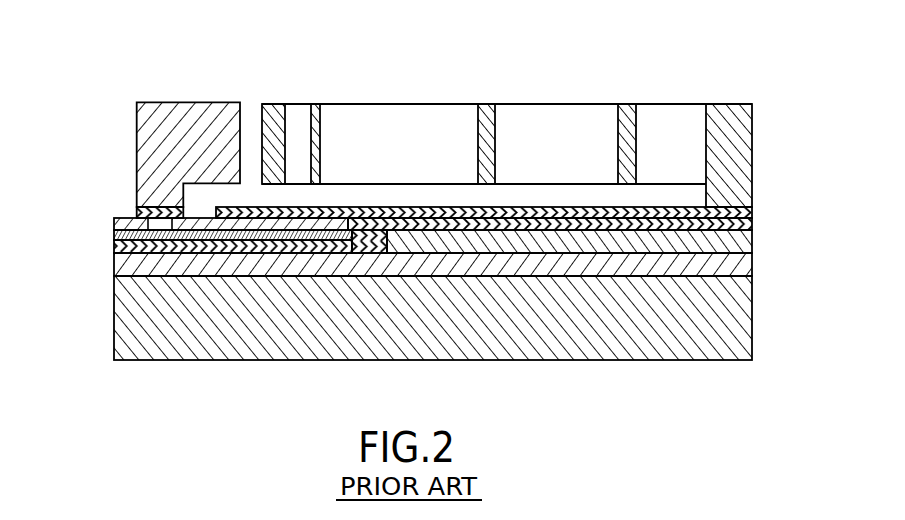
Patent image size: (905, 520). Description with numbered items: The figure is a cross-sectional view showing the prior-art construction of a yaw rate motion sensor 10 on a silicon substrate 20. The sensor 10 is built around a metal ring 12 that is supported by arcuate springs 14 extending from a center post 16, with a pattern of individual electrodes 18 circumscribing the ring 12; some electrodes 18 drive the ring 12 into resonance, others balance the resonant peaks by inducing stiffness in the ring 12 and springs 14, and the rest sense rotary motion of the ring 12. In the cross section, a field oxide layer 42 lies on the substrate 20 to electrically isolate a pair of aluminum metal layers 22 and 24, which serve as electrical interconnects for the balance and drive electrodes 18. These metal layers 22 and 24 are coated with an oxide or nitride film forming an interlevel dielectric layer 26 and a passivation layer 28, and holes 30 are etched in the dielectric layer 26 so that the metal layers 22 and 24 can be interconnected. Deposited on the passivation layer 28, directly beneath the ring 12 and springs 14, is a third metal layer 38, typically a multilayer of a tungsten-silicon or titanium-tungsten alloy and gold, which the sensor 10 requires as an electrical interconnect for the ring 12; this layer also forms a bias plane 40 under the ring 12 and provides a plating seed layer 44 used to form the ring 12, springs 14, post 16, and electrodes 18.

The yaw rate motion sensor 10 is at (125, 92).
The metal ring 12 is at (268, 105).
The arcuate springs 14 is at (317, 123).
The center post 16 is at (737, 107).
The electrodes 18 is at (153, 147).
The silicon substrate 20 is at (125, 302).
The metal layer 22 is at (348, 248).
The metal layer 24 is at (118, 228).
The interlevel dielectric layer 26 is at (120, 247).
The passivation layer 28 is at (748, 223).
The holes 30 is at (338, 235).
The third metal layer 38 is at (653, 207).
The bias plane 40 is at (528, 210).
The field oxide layer 42 is at (748, 263).
The plating seed layer 44 is at (140, 208).